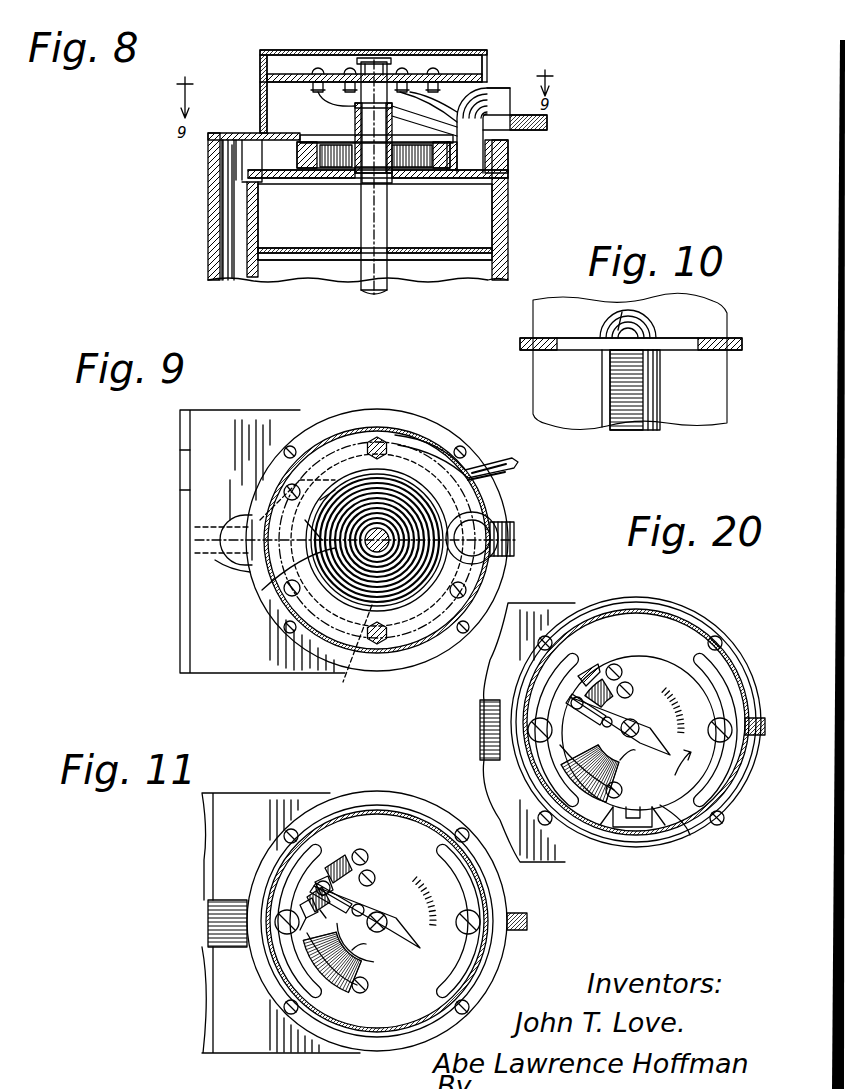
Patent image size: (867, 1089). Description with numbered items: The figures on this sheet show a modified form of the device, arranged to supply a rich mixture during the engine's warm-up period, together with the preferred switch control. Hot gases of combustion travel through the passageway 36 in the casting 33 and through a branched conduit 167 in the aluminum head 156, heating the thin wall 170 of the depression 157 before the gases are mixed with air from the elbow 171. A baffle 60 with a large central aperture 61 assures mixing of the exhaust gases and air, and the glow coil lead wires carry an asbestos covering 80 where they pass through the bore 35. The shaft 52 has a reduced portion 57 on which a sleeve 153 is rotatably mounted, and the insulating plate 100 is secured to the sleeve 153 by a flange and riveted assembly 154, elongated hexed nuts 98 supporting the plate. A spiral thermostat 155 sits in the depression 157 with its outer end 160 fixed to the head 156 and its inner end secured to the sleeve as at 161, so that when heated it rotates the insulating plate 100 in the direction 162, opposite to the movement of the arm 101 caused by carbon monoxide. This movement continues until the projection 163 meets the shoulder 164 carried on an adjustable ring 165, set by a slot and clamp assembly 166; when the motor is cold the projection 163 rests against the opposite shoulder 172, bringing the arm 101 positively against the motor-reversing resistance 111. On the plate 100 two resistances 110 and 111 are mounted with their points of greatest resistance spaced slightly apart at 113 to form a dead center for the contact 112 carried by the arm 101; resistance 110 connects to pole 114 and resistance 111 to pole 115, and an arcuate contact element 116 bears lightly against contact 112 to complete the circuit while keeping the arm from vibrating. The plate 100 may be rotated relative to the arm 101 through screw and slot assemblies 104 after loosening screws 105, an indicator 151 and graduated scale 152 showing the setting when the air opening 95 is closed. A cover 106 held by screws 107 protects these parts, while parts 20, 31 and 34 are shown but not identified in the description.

In FIG. 9, the casing 20 is at (180, 487).
In FIG. 9, the opening 31 is at (195, 537).
In FIG. 8, the casting 33 is at (200, 222).
In FIG. 9, the casting 33 is at (255, 408).
In FIG. 20, the casting 33 is at (526, 616).
In FIG. 11, the casting 33 is at (226, 803).
In FIG. 9, the housing wall 34 is at (180, 447).
In FIG. 8, the bore 35 is at (498, 222).
In FIG. 8, the passageway 36 is at (222, 240).
In FIG. 9, the passageway 36 is at (215, 560).
In FIG. 8, the shaft 52 is at (383, 230).
In FIG. 8, the reduced portion 57 is at (385, 62).
In FIG. 9, the reduced portion 57 is at (390, 552).
In FIG. 8, the baffle 60 is at (473, 255).
In FIG. 8, the central aperture 61 is at (436, 255).
In FIG. 8, the asbestos covering 80 is at (387, 262).
In FIG. 9, the asbestos covering 80 is at (425, 455).
In FIG. 8, the air opening 95 is at (525, 86).
In FIG. 10, the hexed nuts 98 is at (602, 399).
In FIG. 8, the insulating plate 100 is at (458, 76).
In FIG. 10, the insulating plate 100 is at (725, 350).
In FIG. 20, the insulating plate 100 is at (670, 683).
In FIG. 11, the insulating plate 100 is at (415, 979).
In FIG. 20, the arm 101 is at (640, 720).
In FIG. 11, the arm 101 is at (376, 910).
In FIG. 11, the screw and slot assemblies 104 is at (308, 878).
In FIG. 10, the screws 105 is at (615, 320).
In FIG. 20, the screws 105 is at (528, 728).
In FIG. 11, the screws 105 is at (480, 928).
In FIG. 8, the cover 106 is at (282, 41).
In FIG. 9, the cover 106 is at (362, 432).
In FIG. 10, the cover 106 is at (585, 377).
In FIG. 20, the cover 106 is at (672, 628).
In FIG. 11, the cover 106 is at (378, 815).
In FIG. 20, the screws 107 is at (540, 643).
In FIG. 11, the screws 107 is at (295, 955).
In FIG. 11, the resistance 110 is at (343, 870).
In FIG. 20, the resistance 111 is at (590, 790).
In FIG. 11, the resistance 111 is at (320, 960).
In FIG. 11, the contact 112 is at (326, 868).
In FIG. 20, the dead center space 113 is at (565, 720).
In FIG. 11, the dead center space 113 is at (305, 912).
In FIG. 20, the pole 114 is at (613, 664).
In FIG. 11, the pole 114 is at (364, 849).
In FIG. 20, the pole 115 is at (640, 783).
In FIG. 11, the pole 115 is at (352, 992).
In FIG. 20, the arcuate contact element 116 is at (605, 740).
In FIG. 11, the arcuate contact element 116 is at (349, 957).
In FIG. 20, the indicator 151 is at (660, 735).
In FIG. 11, the indicator 151 is at (398, 935).
In FIG. 20, the graduated scale 152 is at (690, 688).
In FIG. 11, the graduated scale 152 is at (452, 900).
In FIG. 8, the sleeve 153 is at (387, 114).
In FIG. 9, the sleeve 153 is at (385, 600).
In FIG. 8, the flange and riveted assembly 154 is at (370, 58).
In FIG. 8, the spiral thermostat 155 is at (345, 172).
In FIG. 9, the spiral thermostat 155 is at (365, 575).
In FIG. 8, the head 156 is at (505, 158).
In FIG. 8, the depression 157 is at (420, 162).
In FIG. 9, the depression 157 is at (352, 485).
In FIG. 8, the outer end 160 is at (308, 168).
In FIG. 9, the outer end 160 is at (265, 580).
In FIG. 9, the inner end attachment 161 is at (345, 585).
In FIG. 20, the direction 162 is at (682, 754).
In FIG. 20, the projection 163 is at (630, 828).
In FIG. 20, the shoulder 164 is at (640, 822).
In FIG. 8, the adjustable ring 165 is at (485, 80).
In FIG. 20, the adjustable ring 165 is at (680, 820).
In FIG. 20, the slot and clamp assembly 166 is at (730, 750).
In FIG. 11, the slot and clamp assembly 166 is at (367, 923).
In FIG. 8, the branched conduit 167 is at (242, 138).
In FIG. 9, the branched conduit 167 is at (258, 520).
In FIG. 8, the thin wall 170 is at (500, 178).
In FIG. 9, the thin wall 170 is at (361, 652).
In FIG. 8, the elbow 171 is at (495, 86).
In FIG. 9, the elbow 171 is at (514, 537).
In FIG. 20, the shoulder 172 is at (605, 822).